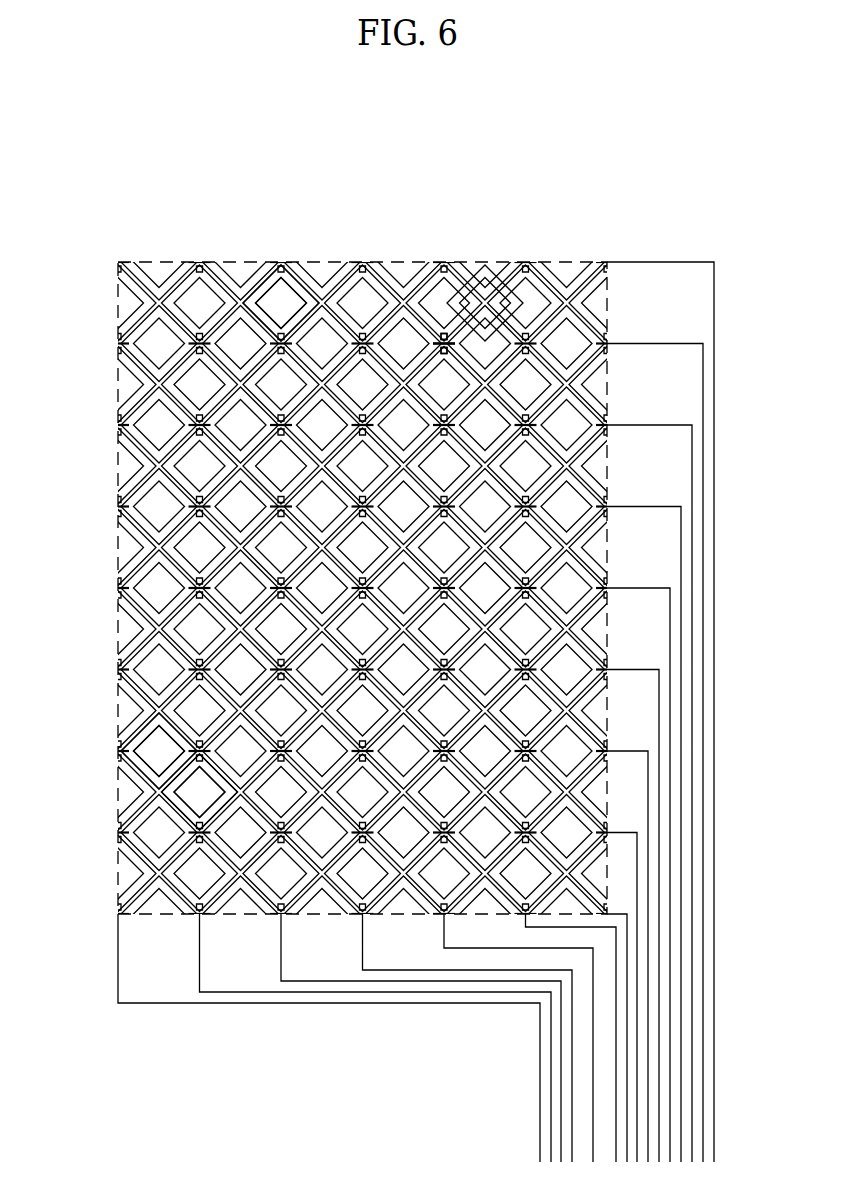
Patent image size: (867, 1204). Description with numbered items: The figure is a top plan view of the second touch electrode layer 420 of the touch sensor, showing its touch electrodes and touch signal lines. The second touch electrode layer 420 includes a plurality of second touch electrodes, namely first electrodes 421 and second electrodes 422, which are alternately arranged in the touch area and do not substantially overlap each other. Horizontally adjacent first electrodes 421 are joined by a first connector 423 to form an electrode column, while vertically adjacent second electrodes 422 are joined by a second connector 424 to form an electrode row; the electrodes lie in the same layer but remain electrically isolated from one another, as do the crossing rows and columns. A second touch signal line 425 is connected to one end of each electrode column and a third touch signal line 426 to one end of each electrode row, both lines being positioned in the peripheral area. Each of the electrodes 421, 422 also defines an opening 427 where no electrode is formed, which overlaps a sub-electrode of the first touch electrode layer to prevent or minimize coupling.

The second touch electrode layer 420 is at (144, 178).
The first electrode 421 is at (325, 313).
The second electrode 422 is at (292, 282).
The first connector 423 is at (430, 338).
The second connector 424 is at (477, 318).
The second touch signal line 425 is at (301, 1005).
The third touch signal line 426 is at (714, 297).
The opening 427 is at (197, 793).